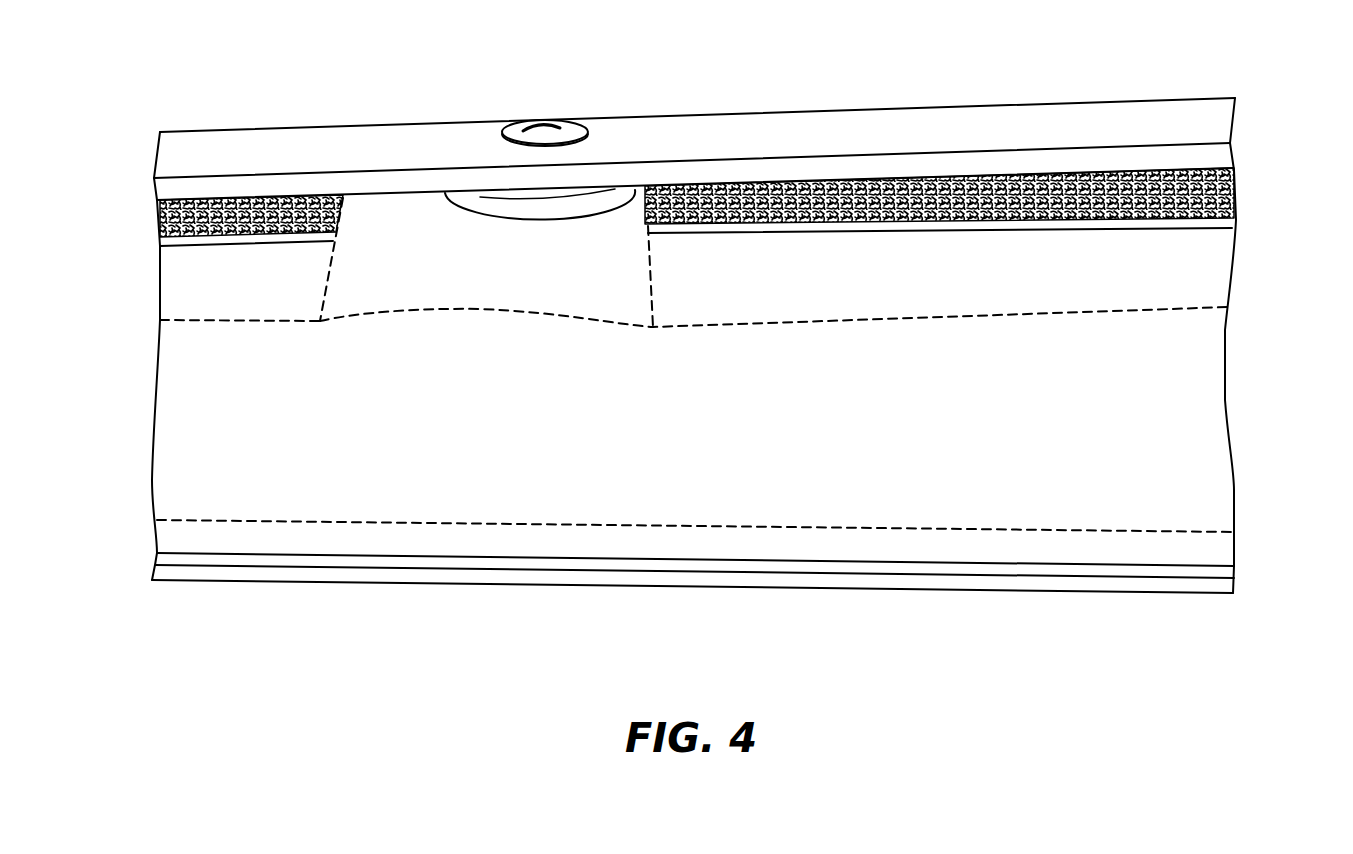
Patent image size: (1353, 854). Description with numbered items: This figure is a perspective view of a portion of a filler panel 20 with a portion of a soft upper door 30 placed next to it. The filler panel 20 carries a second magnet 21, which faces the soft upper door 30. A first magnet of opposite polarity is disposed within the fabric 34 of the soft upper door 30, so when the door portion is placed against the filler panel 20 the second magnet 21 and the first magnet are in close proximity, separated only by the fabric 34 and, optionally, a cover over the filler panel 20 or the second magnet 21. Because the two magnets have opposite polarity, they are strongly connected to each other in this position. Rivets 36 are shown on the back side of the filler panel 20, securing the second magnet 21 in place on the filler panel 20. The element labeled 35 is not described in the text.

The filler panel 20 is at (1233, 122).
The second magnet 21 is at (603, 203).
The soft upper door 30 is at (156, 394).
The fabric 34 is at (1183, 270).
The adhesive strip 35 is at (603, 235).
The rivets 36 is at (523, 134).